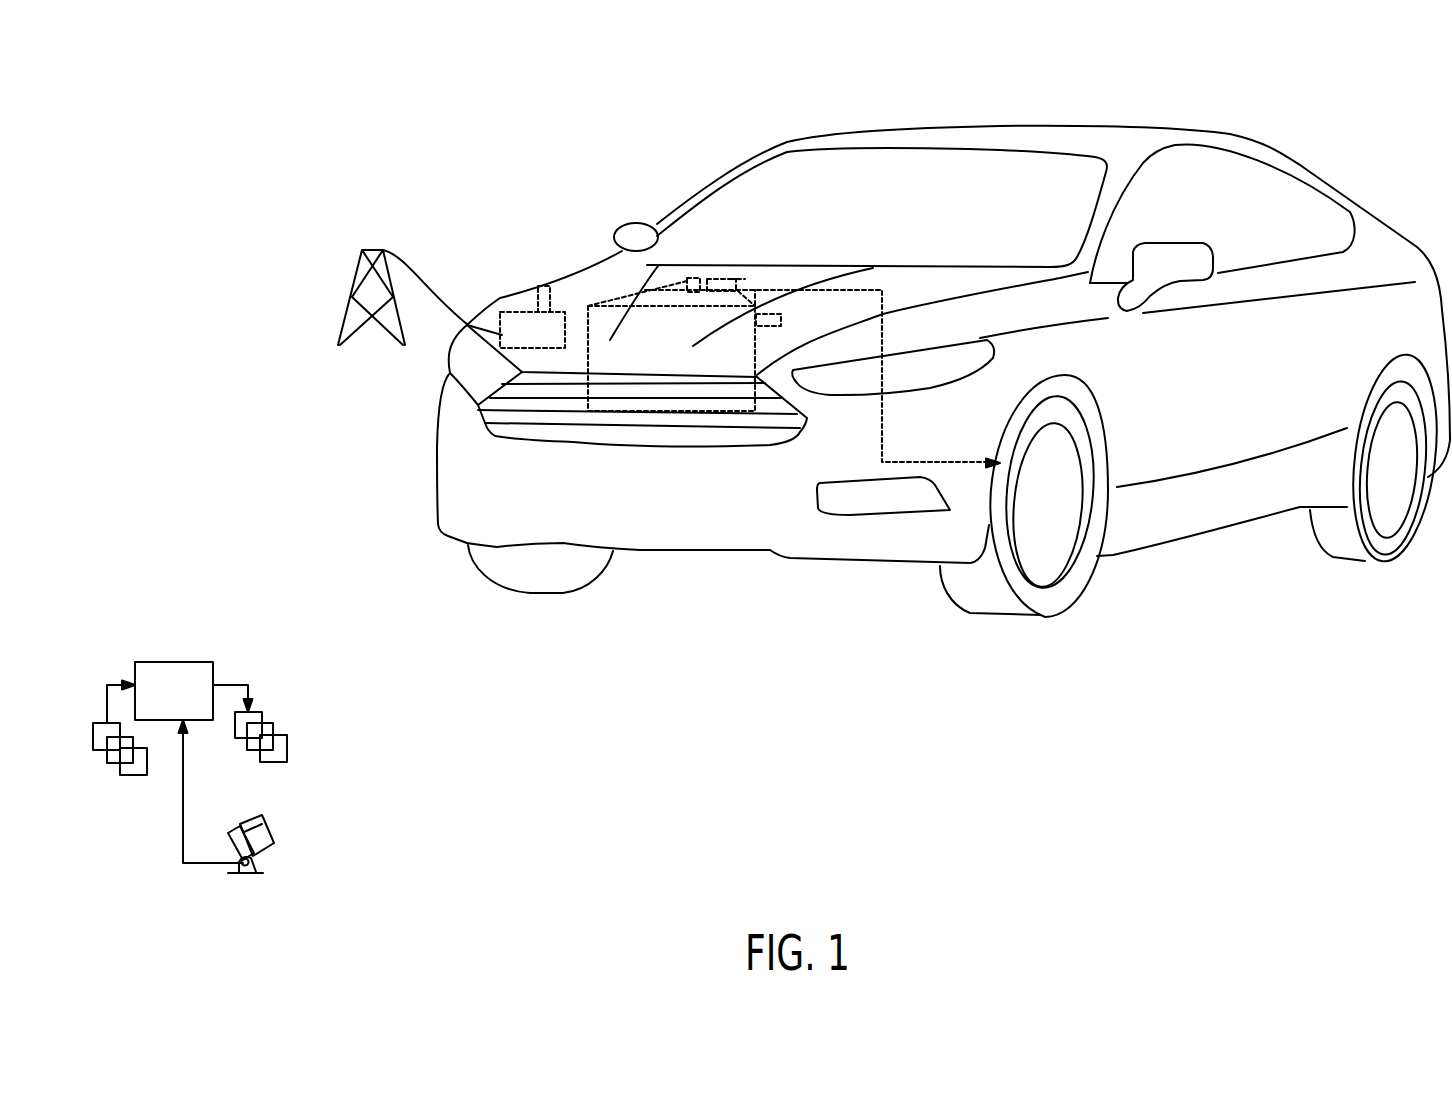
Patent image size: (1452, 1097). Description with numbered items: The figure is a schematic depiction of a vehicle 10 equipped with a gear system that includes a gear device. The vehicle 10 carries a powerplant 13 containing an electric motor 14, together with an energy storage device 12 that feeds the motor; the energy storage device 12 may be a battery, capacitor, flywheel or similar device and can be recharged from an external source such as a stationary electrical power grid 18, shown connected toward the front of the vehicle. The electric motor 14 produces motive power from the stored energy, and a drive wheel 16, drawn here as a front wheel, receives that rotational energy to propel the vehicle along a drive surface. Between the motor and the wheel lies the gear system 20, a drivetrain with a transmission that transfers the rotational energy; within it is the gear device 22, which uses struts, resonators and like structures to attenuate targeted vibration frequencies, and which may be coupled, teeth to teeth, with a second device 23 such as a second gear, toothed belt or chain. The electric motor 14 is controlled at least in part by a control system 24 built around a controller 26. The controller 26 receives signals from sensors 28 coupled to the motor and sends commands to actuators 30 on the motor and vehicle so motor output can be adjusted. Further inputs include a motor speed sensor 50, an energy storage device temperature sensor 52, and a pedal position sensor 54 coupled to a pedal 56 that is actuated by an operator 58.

The vehicle 10 is at (447, 130).
The energy storage device 12 is at (546, 345).
The powerplant 13 is at (590, 290).
The electric motor 14 is at (684, 368).
The drive wheel 16 is at (1053, 558).
The stationary electrical power grid 18 is at (362, 251).
The gear system 20 is at (713, 279).
The gear device 22 is at (691, 278).
The second device 23 is at (740, 277).
The control system 24 is at (310, 651).
The controller 26 is at (186, 704).
The sensors 28 is at (153, 778).
The actuators 30 is at (298, 761).
The motor speed sensor 50 is at (783, 320).
The energy storage device temperature sensor 52 is at (540, 303).
The pedal position sensor 54 is at (263, 866).
The pedal 56 is at (228, 838).
The operator 58 is at (270, 832).